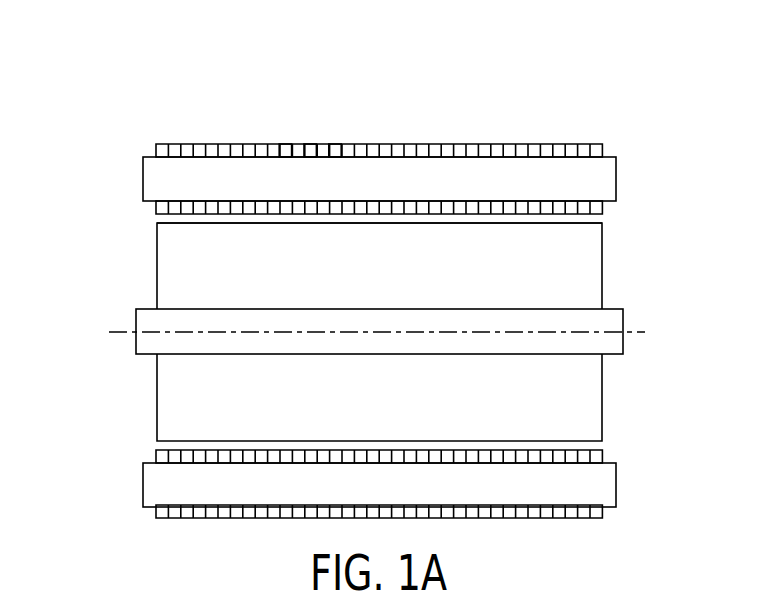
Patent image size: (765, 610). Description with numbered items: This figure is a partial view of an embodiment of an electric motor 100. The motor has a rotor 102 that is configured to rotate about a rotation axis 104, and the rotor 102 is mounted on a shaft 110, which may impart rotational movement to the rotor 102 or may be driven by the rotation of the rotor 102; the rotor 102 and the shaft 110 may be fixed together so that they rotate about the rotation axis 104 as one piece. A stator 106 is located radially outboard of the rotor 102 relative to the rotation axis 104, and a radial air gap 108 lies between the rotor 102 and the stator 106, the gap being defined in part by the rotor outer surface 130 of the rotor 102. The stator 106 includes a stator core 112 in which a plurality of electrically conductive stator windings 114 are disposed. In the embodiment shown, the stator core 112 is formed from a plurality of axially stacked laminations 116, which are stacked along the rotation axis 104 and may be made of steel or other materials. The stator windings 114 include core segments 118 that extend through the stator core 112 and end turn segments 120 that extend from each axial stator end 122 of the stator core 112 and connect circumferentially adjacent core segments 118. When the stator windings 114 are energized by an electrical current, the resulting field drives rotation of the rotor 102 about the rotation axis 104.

The electric motor 100 is at (113, 84).
The rotor 102 is at (395, 282).
The rotation axis 104 is at (633, 330).
The stator 106 is at (599, 110).
The radial air gap 108 is at (141, 215).
The shaft 110 is at (147, 345).
The stator core 112 is at (404, 144).
The stator windings 114 is at (500, 172).
The laminations 116 is at (314, 143).
The core segments 118 is at (338, 158).
The end turn segments 120 is at (152, 184).
The axial stator end 122 is at (155, 147).
The rotor outer surface 130 is at (531, 224).